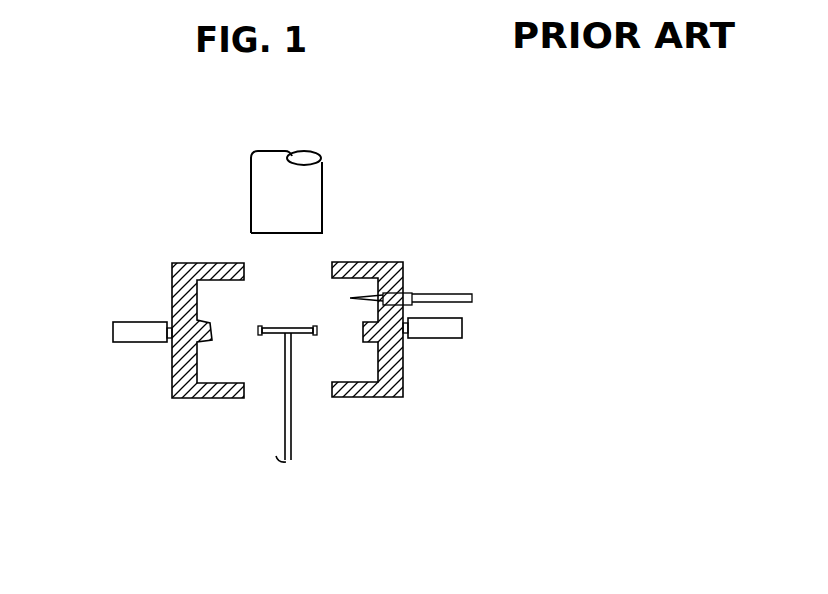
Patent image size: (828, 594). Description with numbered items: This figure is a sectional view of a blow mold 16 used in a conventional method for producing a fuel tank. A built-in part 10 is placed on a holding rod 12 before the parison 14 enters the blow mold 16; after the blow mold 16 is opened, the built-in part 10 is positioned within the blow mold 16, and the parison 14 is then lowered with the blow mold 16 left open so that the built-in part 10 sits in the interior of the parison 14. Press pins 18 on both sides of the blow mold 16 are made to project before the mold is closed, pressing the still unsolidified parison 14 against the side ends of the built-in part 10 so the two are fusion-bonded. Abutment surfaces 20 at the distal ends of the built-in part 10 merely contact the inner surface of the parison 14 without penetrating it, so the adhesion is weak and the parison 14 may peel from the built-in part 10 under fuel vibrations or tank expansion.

The built-in part 10 is at (303, 334).
The holding rod 12 is at (283, 422).
The parison 14 is at (322, 197).
The blow mold 16 is at (162, 268).
The press pins 18 is at (172, 345).
The abutment surfaces 20 is at (260, 330).